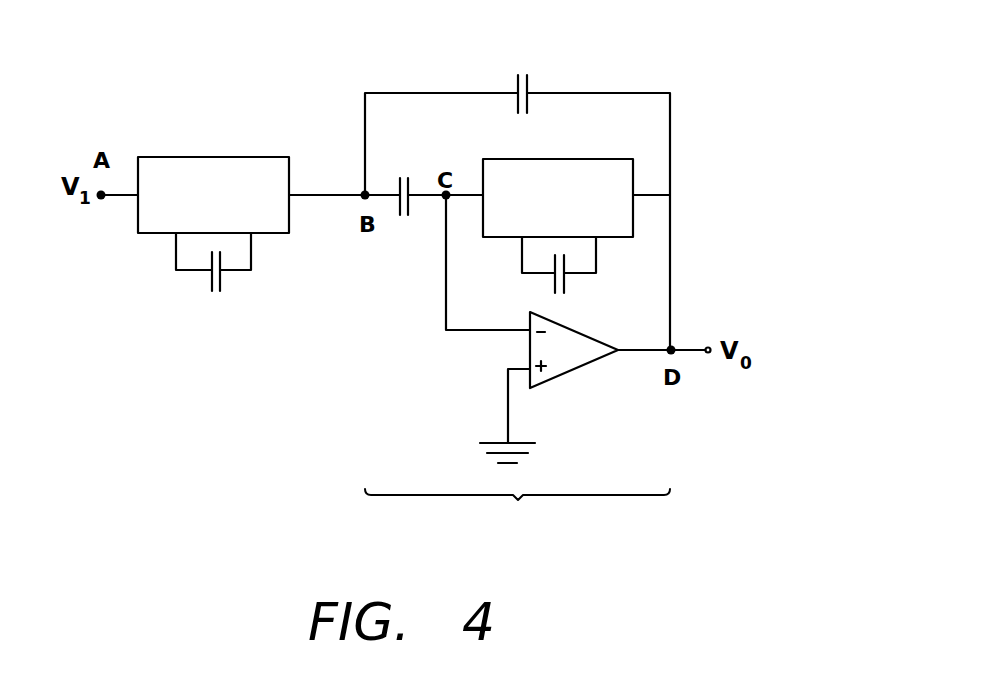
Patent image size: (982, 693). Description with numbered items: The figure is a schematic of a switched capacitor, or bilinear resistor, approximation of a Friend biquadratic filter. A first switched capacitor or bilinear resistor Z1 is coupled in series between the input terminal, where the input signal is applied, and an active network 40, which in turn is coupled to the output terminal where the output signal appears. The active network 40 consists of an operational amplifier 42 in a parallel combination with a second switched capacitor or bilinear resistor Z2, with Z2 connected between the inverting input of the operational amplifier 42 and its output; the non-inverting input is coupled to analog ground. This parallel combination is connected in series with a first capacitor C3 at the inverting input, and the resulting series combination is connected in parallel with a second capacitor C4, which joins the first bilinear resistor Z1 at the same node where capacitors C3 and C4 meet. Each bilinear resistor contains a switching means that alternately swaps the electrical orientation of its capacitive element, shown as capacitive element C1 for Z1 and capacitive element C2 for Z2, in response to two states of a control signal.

The active network 40 is at (517, 512).
The operational amplifier 42 is at (572, 370).
The first switched capacitor or bilinear resistor Z1 is at (222, 134).
The second switched capacitor or bilinear resistor Z2 is at (558, 147).
The capacitive element C1 is at (213, 281).
The capacitive element C2 is at (564, 274).
The first capacitor C3 is at (409, 218).
The second capacitor C4 is at (517, 193).